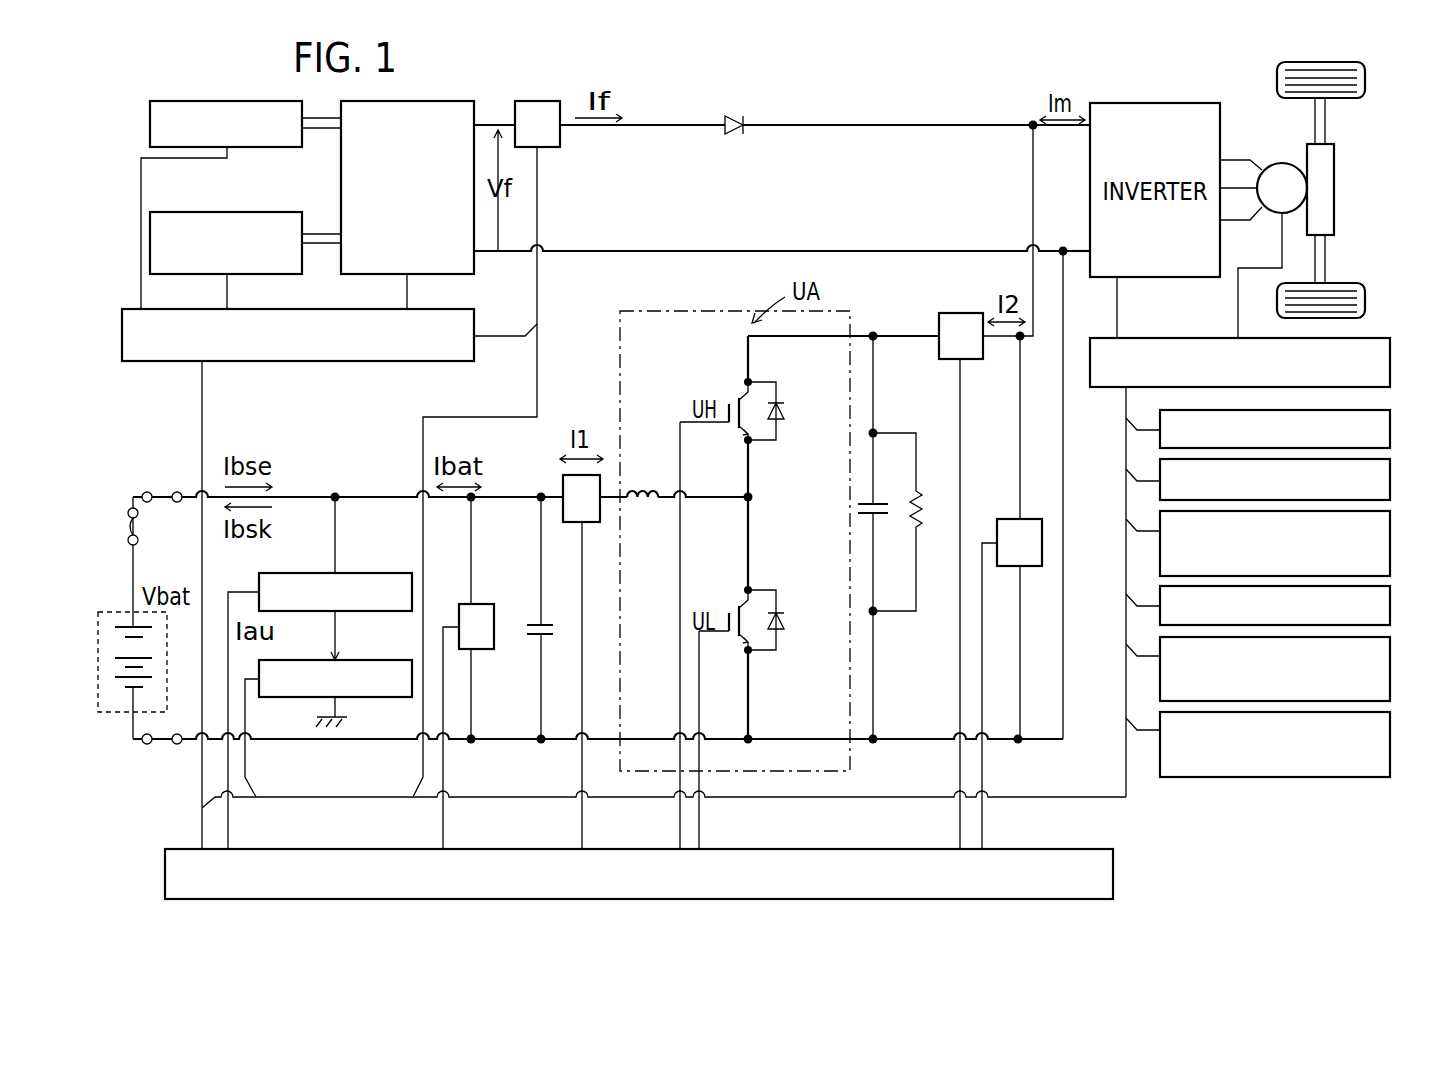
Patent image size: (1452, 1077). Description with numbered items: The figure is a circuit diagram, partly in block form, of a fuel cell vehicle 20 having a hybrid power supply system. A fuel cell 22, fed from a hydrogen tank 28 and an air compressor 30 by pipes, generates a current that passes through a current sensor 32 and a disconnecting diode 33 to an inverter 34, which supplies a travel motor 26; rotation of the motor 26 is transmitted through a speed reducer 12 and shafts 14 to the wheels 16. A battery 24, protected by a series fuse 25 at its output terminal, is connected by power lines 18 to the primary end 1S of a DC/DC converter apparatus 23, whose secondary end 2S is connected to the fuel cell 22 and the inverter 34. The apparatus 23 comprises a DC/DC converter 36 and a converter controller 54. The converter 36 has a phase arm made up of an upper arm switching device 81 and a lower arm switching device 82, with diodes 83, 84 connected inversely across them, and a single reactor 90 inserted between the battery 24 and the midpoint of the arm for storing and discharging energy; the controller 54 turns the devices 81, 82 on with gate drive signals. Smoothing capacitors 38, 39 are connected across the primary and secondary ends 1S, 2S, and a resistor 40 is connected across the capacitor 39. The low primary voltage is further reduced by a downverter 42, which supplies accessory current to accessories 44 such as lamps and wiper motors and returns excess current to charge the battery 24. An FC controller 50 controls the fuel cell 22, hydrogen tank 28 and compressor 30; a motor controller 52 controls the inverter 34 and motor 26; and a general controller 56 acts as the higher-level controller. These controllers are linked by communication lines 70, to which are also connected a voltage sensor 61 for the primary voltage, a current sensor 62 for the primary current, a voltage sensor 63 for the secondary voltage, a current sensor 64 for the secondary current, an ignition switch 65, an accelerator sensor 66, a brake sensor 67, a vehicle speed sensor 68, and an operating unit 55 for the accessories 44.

The speed reducer 12 is at (1334, 190).
The shafts 14 is at (1326, 126).
The wheels 16 is at (1366, 84).
The power lines 18 is at (162, 493).
The fuel cell vehicle 20 is at (975, 87).
The fuel cell 22 is at (341, 193).
The DC/DC converter apparatus (VCU) 23 is at (658, 292).
The battery 24 is at (104, 606).
The fuse 25 is at (140, 529).
The travel motor 26 is at (1284, 160).
The hydrogen tank 28 is at (258, 148).
The air compressor 30 is at (160, 210).
The current sensor 32 is at (548, 148).
The diode 33 is at (737, 112).
The inverter 34 is at (1090, 213).
The DC/DC converter 36 is at (619, 375).
The smoothing capacitor 38 is at (528, 631).
The smoothing capacitor 39 is at (880, 512).
The resistor 40 is at (919, 512).
The downverter 42 is at (403, 573).
The accessories 44 is at (403, 660).
The FC controller 50 is at (408, 361).
The motor controller 52 is at (1390, 356).
The converter controller 54 is at (903, 849).
The operating unit 55 is at (1390, 431).
The general controller 56 is at (1390, 731).
The voltage sensor 61 is at (484, 604).
The current sensor 62 is at (590, 522).
The voltage sensor 63 is at (1035, 519).
The current sensor 64 is at (965, 313).
The ignition switch 65 is at (1390, 482).
The accelerator sensor 66 is at (1390, 532).
The brake sensor 67 is at (1390, 607).
The vehicle speed sensor 68 is at (1390, 657).
The communication lines 70 is at (202, 826).
The upper arm switching device 81 is at (738, 395).
The lower arm switching device 82 is at (738, 608).
The diode 83 is at (782, 415).
The diode 84 is at (782, 625).
The reactor 90 is at (643, 488).
The primary end 1S is at (541, 493).
The secondary end 2S is at (1017, 341).